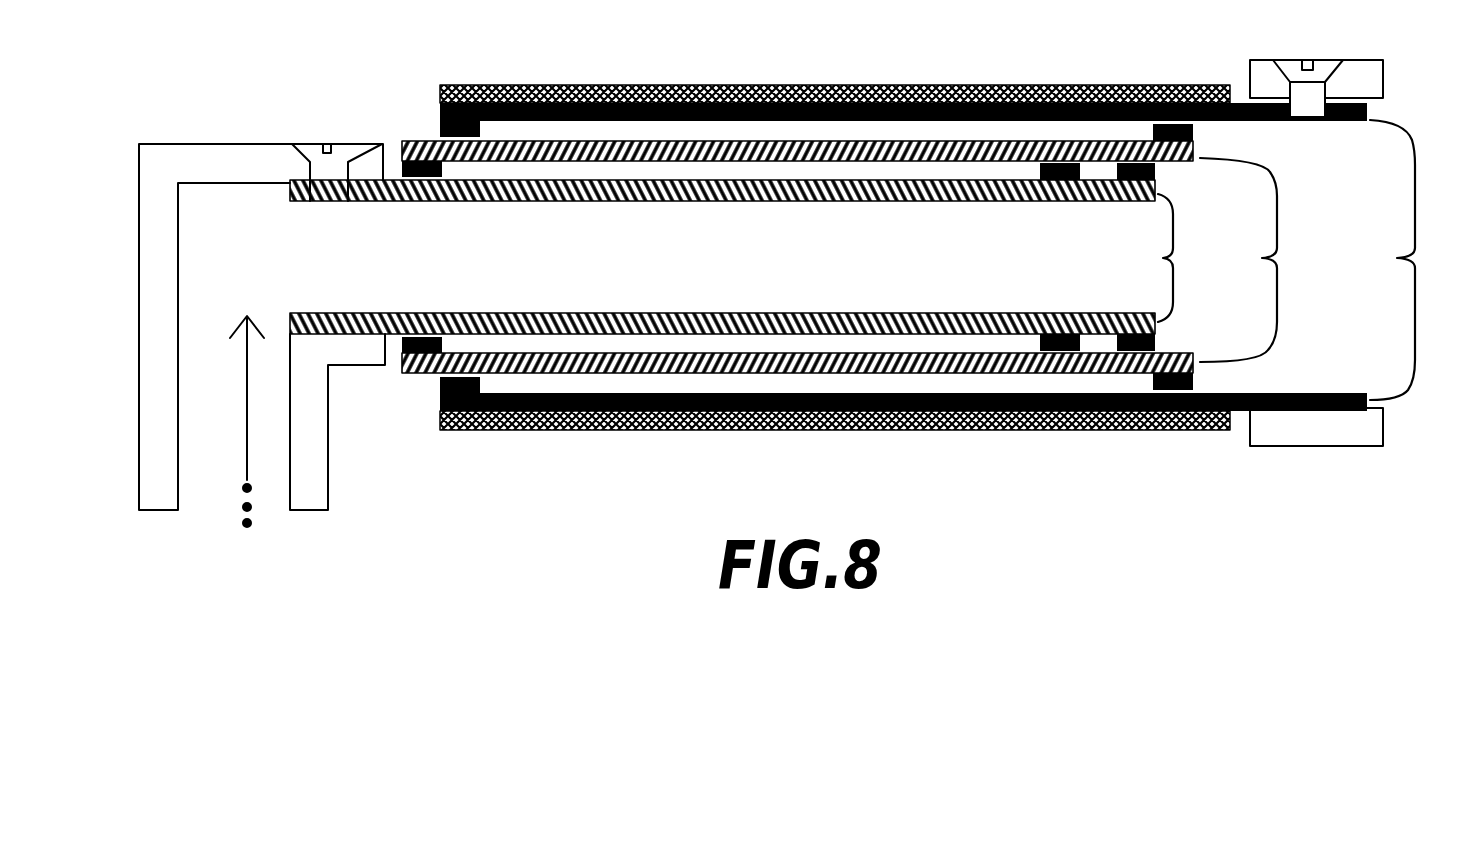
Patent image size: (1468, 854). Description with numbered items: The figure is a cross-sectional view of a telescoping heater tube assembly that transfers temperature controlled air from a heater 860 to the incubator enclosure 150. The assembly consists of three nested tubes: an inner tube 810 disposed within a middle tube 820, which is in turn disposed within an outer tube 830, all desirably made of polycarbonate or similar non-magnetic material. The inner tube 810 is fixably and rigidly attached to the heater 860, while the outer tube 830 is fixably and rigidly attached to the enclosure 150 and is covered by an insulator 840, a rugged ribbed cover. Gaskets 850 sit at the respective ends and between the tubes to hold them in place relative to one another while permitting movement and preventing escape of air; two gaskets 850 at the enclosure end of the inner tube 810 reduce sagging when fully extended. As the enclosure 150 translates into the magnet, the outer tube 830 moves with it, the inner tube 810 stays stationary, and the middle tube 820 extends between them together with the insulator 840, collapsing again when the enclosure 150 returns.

The enclosure 150 is at (1312, 433).
The inner tube 810 is at (1197, 258).
The middle tube 820 is at (1271, 260).
The outer tube 830 is at (1417, 260).
The insulator 840 is at (738, 78).
The gaskets 850 is at (480, 168).
The heater 860 is at (250, 443).